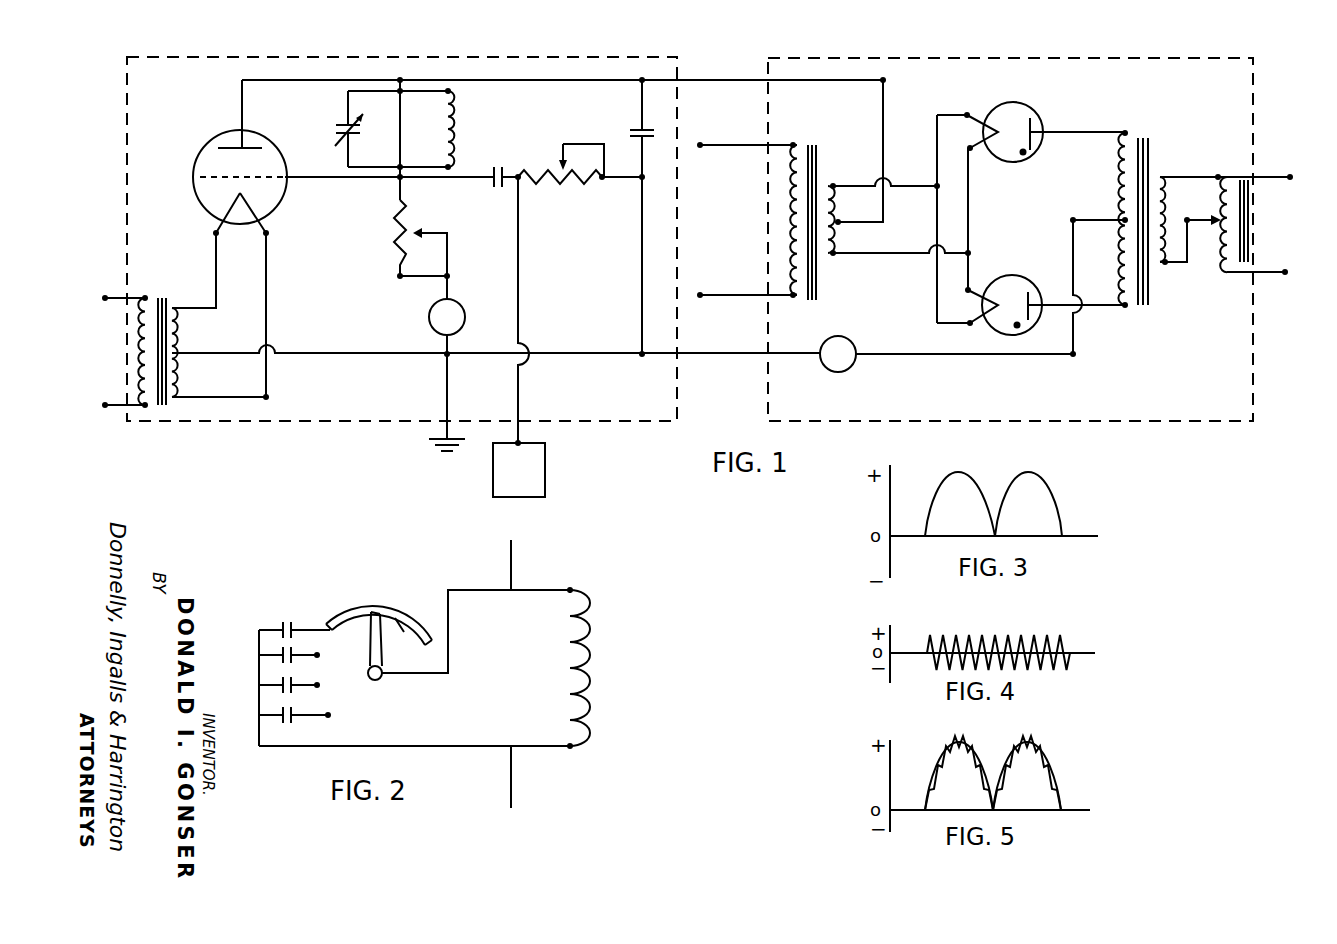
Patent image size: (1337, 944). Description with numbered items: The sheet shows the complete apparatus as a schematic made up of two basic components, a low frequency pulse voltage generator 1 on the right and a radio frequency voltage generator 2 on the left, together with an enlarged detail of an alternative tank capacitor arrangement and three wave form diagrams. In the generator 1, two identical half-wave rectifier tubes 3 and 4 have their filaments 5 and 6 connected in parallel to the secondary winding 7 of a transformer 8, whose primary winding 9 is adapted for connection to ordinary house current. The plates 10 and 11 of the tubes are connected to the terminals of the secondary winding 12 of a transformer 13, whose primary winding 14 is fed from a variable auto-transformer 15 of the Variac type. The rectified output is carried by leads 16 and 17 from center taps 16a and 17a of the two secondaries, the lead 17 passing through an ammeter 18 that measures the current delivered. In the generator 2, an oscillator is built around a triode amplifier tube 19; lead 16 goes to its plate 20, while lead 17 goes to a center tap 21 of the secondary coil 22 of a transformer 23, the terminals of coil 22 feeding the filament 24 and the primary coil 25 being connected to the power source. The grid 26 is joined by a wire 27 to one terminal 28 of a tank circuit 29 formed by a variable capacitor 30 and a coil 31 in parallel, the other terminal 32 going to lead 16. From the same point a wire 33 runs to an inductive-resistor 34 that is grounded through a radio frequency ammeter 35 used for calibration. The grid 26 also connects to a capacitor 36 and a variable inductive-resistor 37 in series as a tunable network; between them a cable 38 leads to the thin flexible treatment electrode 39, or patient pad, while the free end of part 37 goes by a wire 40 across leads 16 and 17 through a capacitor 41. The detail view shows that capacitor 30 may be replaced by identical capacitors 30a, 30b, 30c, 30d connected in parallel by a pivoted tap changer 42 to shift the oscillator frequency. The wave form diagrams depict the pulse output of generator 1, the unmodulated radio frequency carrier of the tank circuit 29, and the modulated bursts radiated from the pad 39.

In FIG. 1, the low frequency, pulse voltage generator 1 is at (1254, 93).
In FIG. 1, the radio frequency voltage generator 2 is at (680, 81).
In FIG. 1, the half-wave rectifier tube 3 is at (1046, 129).
In FIG. 1, the half-wave rectifier tube 4 is at (1025, 292).
In FIG. 1, the filament 5 is at (992, 150).
In FIG. 1, the filament 6 is at (1000, 296).
In FIG. 1, the secondary winding 7 is at (836, 250).
In FIG. 1, the transformer 8 is at (822, 184).
In FIG. 1, the primary winding 9 is at (794, 180).
In FIG. 1, the plate 10 is at (1028, 118).
In FIG. 1, the plate 11 is at (1030, 300).
In FIG. 1, the secondary winding 12 is at (1120, 158).
In FIG. 1, the transformer 13 is at (1152, 158).
In FIG. 1, the primary winding 14 is at (1166, 208).
In FIG. 1, the variable auto-transformer 15 is at (1222, 241).
In FIG. 1, the lead 16 is at (838, 82).
In FIG. 1, the center tap 16a is at (838, 222).
In FIG. 1, the lead 17 is at (978, 358).
In FIG. 1, the center tap 17a is at (1122, 218).
In FIG. 1, the ammeter 18 is at (852, 368).
In FIG. 1, the amplifier tube 19 is at (278, 141).
In FIG. 1, the plate 20 is at (262, 150).
In FIG. 1, the center tap 21 is at (176, 355).
In FIG. 1, the secondary coil 22 is at (180, 378).
In FIG. 1, the transformer 23 is at (160, 300).
In FIG. 1, the filament 24 is at (256, 192).
In FIG. 1, the primary coil 25 is at (140, 326).
In FIG. 1, the grid 26 is at (240, 176).
In FIG. 1, the wire 27 is at (312, 178).
In FIG. 1, the terminal 28 is at (408, 180).
In FIG. 2, the terminal 28 is at (512, 780).
In FIG. 1, the tank circuit 29 is at (456, 143).
In FIG. 2, the tank circuit 29 is at (596, 686).
In FIG. 1, the variable capacitor 30 is at (360, 134).
In FIG. 2, the capacitor 30a is at (292, 624).
In FIG. 2, the capacitor 30b is at (291, 655).
In FIG. 2, the capacitor 30c is at (291, 685).
In FIG. 2, the capacitor 30d is at (291, 715).
In FIG. 1, the coil 31 is at (460, 108).
In FIG. 2, the coil 31 is at (590, 656).
In FIG. 1, the terminal 32 is at (403, 86).
In FIG. 2, the terminal 32 is at (512, 556).
In FIG. 1, the wire 33 is at (398, 186).
In FIG. 1, the inductive-resistor 34 is at (396, 230).
In FIG. 1, the radio frequency ammeter 35 is at (431, 314).
In FIG. 1, the capacitor 36 is at (503, 176).
In FIG. 1, the variable inductive-resistor 37 is at (572, 172).
In FIG. 1, the cable 38 is at (521, 262).
In FIG. 1, the treatment electrode 39 is at (545, 476).
In FIG. 1, the wire 40 is at (640, 245).
In FIG. 1, the capacitor 41 is at (632, 131).
In FIG. 2, the pivoted tap changer 42 is at (392, 616).